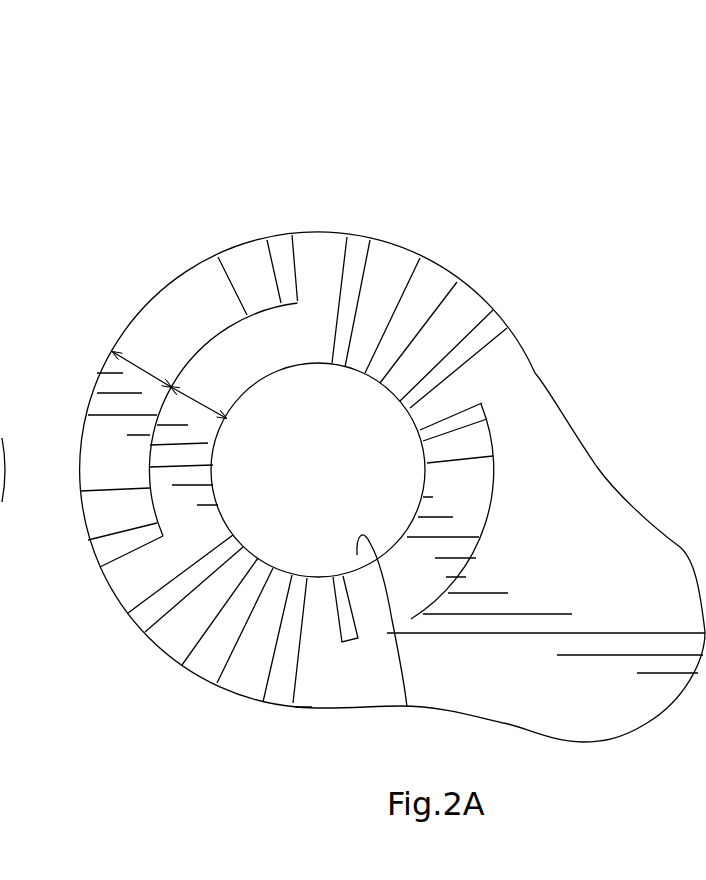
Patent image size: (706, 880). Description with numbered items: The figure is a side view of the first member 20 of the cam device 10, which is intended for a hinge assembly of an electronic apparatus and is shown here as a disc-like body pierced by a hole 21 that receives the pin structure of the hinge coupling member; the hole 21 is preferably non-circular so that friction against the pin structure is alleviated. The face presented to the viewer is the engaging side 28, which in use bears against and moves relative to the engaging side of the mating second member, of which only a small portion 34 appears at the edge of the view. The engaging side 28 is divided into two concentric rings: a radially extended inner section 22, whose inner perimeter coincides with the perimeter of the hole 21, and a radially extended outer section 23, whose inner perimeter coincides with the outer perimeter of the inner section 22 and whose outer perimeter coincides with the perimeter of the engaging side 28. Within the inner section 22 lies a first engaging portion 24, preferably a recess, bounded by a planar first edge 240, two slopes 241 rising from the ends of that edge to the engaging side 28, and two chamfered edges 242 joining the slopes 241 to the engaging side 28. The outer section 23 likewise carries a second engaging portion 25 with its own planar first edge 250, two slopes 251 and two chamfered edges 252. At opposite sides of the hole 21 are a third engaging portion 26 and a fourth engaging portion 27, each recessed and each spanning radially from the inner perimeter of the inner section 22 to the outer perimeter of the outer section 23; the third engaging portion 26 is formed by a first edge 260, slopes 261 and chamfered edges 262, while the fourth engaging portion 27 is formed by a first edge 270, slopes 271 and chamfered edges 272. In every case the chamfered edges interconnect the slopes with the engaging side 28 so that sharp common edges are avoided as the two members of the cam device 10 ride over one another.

The cam device 10 is at (51, 136).
The first member 20 is at (508, 700).
The hole 21 is at (407, 707).
The inner section 22 is at (140, 362).
The outer section 23 is at (208, 403).
The first engaging portion 24 is at (538, 491).
The first edge 240 is at (485, 480).
The slopes 241 is at (478, 441).
The chamfered edges 242 is at (468, 417).
The second engaging portion 25 is at (95, 378).
The first edge 250 is at (185, 300).
The slopes 251 is at (240, 257).
The chamfered edges 252 is at (280, 245).
The third engaging portion 26 is at (221, 671).
The first edge 260 is at (205, 672).
The slopes 261 is at (252, 690).
The chamfered edges 262 is at (281, 684).
The fourth engaging portion 27 is at (436, 274).
The first edge 270 is at (435, 270).
The slopes 271 is at (457, 300).
The chamfered edges 272 is at (497, 328).
The engaging side 28 is at (122, 589).
The adjacent component 34 is at (0, 536).